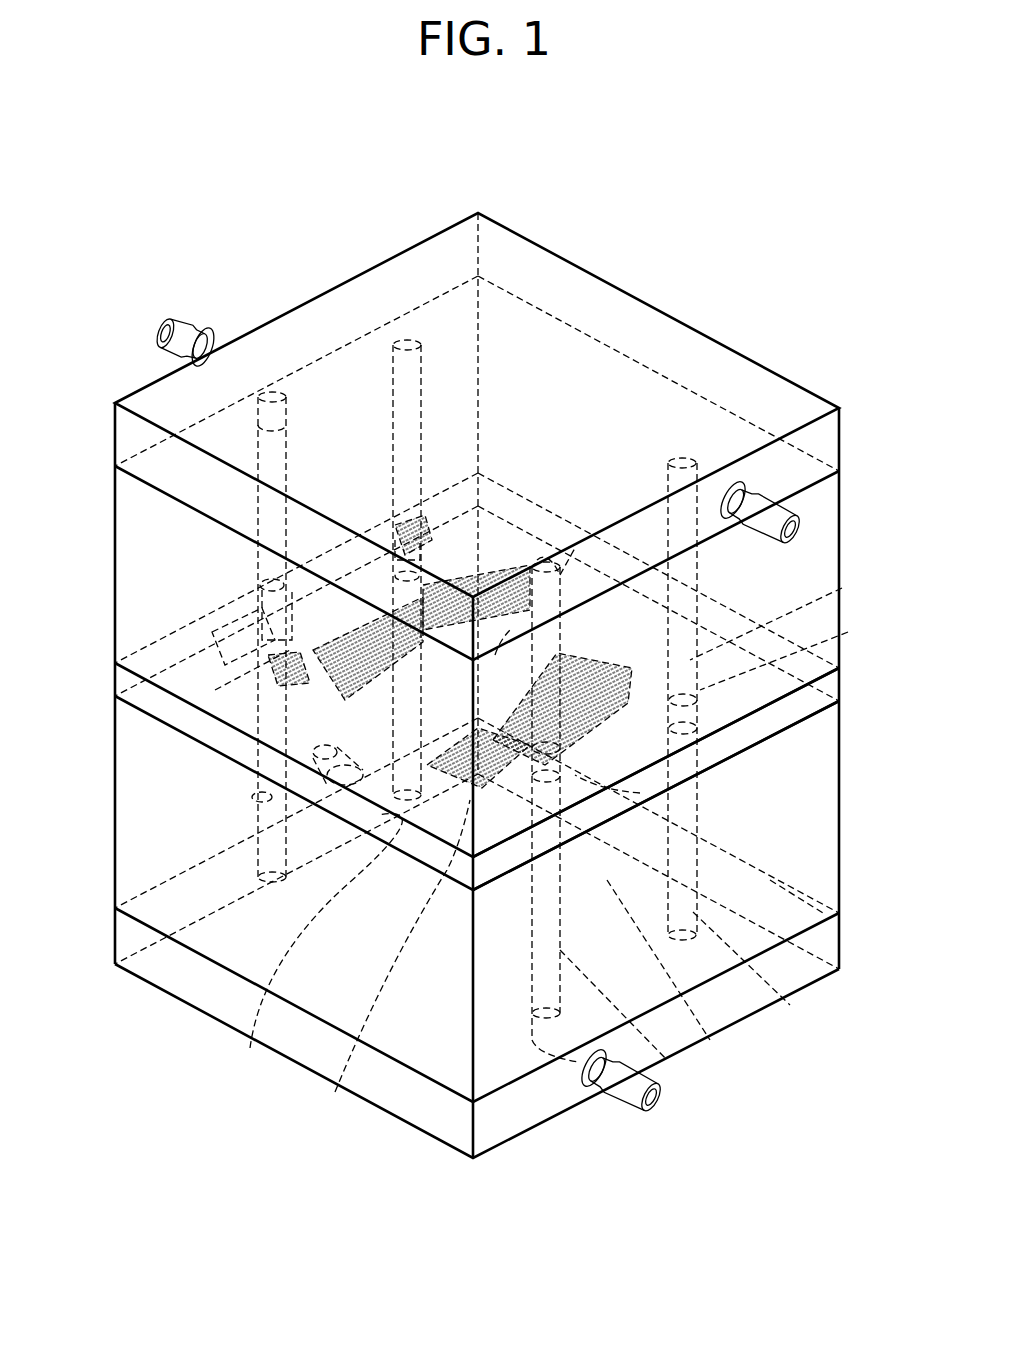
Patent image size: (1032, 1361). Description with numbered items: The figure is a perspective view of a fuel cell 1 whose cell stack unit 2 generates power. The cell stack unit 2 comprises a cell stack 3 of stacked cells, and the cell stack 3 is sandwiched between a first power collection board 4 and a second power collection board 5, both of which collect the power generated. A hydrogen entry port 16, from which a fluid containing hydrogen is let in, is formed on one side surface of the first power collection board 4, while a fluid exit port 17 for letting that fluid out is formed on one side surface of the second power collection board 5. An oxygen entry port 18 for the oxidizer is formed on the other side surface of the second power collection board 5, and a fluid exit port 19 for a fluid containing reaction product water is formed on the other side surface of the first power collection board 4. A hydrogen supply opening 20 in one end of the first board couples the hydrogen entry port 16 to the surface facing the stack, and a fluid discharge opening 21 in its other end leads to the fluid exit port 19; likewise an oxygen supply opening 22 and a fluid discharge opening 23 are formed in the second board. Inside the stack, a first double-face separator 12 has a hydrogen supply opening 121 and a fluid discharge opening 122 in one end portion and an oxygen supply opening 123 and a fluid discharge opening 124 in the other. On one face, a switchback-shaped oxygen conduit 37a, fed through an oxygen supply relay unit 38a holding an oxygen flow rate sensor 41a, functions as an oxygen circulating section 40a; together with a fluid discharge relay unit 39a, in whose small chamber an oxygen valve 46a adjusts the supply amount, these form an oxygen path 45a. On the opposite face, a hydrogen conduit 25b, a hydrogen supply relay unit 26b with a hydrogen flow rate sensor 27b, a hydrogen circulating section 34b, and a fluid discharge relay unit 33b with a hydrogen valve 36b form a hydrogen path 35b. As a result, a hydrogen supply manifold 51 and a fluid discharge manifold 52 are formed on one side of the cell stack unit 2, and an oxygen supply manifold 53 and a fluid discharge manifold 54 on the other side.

The fuel cell 1 is at (512, 186).
The cell stack unit 2 is at (477, 426).
The cell stack 3 is at (849, 683).
The first power collection board 4 is at (750, 355).
The second power collection board 5 is at (849, 938).
The first double-face separator 12 is at (805, 718).
The hydrogen entry port 16 is at (822, 530).
The fluid exit port 17 is at (618, 1105).
The oxygen entry port 18 is at (320, 748).
The fluid exit port 19 is at (193, 326).
The hydrogen supply opening 20 is at (682, 463).
The fluid discharge opening 21 is at (240, 368).
The oxygen supply opening 22 is at (313, 946).
The fluid discharge opening 23 is at (565, 1062).
The hydrogen conduit 25b is at (598, 660).
The hydrogen supply relay unit 26b is at (657, 707).
The hydrogen flow rate sensor 27b is at (848, 632).
The fluid discharge relay unit 33b is at (379, 960).
The hydrogen circulating section 34b is at (497, 658).
The hydrogen path 35b is at (842, 588).
The hydrogen valve 36b is at (640, 793).
The oxygen conduit 37a is at (575, 548).
The oxygen supply relay unit 38a is at (482, 565).
The fluid discharge relay unit 39a is at (258, 584).
The oxygen circulating section 40a is at (440, 660).
The oxygen flow rate sensor 41a is at (437, 498).
The oxygen path 45a is at (537, 560).
The oxygen valve 46a is at (215, 690).
The hydrogen supply manifold 51 is at (790, 1005).
The fluid discharge manifold 52 is at (667, 1060).
The oxygen supply manifold 53 is at (382, 372).
The fluid discharge manifold 54 is at (252, 797).
The hydrogen supply opening 121 is at (818, 805).
The fluid discharge opening 122 is at (710, 1040).
The oxygen supply opening 123 is at (372, 525).
The fluid discharge opening 124 is at (250, 625).